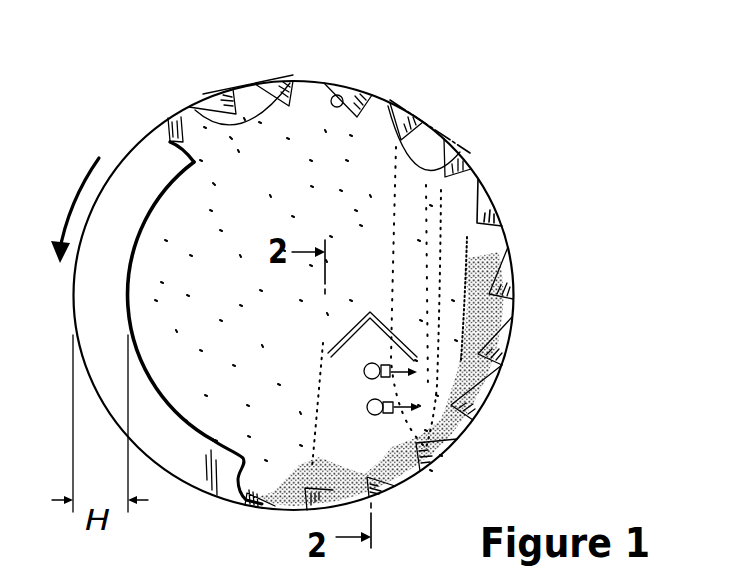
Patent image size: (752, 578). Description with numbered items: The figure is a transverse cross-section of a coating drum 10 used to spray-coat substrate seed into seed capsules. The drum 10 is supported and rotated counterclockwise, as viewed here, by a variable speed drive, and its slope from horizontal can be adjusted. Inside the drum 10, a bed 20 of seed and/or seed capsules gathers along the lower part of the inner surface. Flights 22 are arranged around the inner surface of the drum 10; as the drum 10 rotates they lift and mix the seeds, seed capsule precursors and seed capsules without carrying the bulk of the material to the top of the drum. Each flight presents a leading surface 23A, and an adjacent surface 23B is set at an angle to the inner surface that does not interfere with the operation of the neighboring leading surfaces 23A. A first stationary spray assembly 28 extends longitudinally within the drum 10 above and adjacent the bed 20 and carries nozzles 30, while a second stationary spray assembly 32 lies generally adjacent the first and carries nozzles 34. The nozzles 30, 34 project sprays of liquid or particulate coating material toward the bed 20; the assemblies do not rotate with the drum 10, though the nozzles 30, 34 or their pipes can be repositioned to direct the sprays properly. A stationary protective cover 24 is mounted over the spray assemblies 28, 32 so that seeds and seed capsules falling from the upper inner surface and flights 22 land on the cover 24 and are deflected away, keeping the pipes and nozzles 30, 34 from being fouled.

The drum 10 is at (136, 122).
The bed 20 is at (336, 466).
The flights 22 is at (478, 207).
The leading surfaces 23A is at (341, 88).
The second flight 23B is at (372, 98).
The protective cover 24 is at (358, 312).
The first stationary spray assembly 28 is at (364, 374).
The nozzles 30 is at (389, 366).
The second stationary spray assembly 32 is at (365, 409).
The nozzles 34 is at (388, 414).